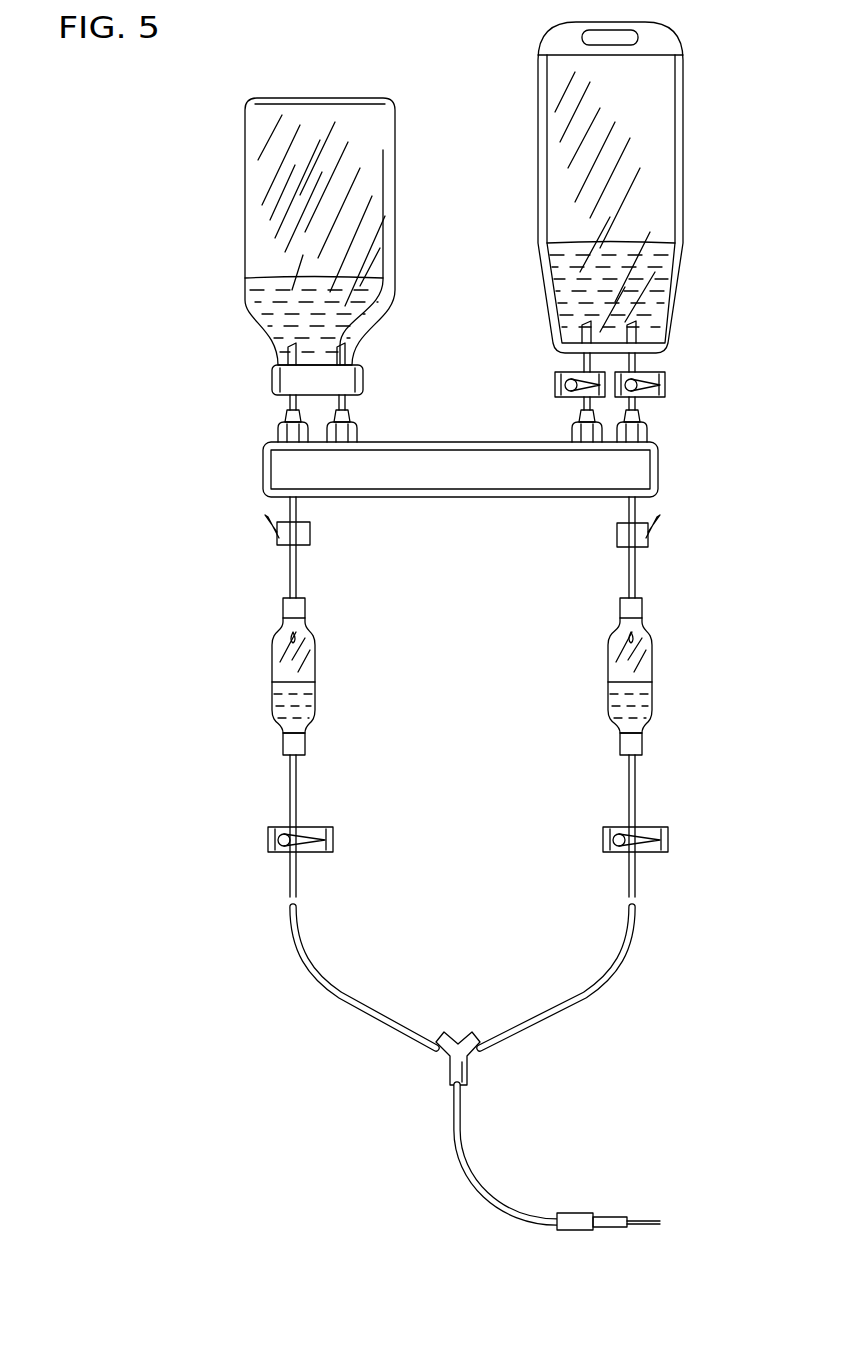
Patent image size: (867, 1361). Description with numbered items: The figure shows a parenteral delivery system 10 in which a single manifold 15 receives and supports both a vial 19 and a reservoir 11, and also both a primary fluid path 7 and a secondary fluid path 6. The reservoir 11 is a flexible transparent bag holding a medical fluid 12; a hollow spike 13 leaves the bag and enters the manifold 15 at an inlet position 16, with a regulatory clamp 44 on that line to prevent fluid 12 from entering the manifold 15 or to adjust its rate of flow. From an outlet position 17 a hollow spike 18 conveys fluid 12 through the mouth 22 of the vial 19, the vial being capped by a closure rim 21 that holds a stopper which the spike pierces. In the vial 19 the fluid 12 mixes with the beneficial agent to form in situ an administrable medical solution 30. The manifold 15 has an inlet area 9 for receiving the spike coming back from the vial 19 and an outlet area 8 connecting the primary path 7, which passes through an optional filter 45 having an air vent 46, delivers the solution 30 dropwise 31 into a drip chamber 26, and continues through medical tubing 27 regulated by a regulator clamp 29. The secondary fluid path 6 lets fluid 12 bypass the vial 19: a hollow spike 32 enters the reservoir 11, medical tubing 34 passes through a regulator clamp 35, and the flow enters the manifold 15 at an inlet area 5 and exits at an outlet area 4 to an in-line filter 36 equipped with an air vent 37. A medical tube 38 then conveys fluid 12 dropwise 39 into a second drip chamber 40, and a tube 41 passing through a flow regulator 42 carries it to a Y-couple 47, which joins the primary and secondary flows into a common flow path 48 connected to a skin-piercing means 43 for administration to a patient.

The parenteral delivery system 10 is at (188, 176).
The vial 19 is at (397, 196).
The medical solution 30 is at (262, 292).
The closure rim 21 is at (272, 378).
The mouth 22 is at (284, 398).
The spike 18 is at (346, 406).
The inlet area 9 is at (276, 434).
The outlet position 17 is at (357, 432).
The reservoir 11 is at (683, 148).
The medical fluid 12 is at (655, 298).
The hollow spike 32 is at (638, 330).
The spike 13 is at (580, 362).
The medical tubing 34 is at (640, 358).
The regulatory clamp 44 is at (556, 385).
The regulator clamp 35 is at (666, 385).
The inlet position 16 is at (572, 432).
The inlet area 5 is at (652, 432).
The outlet area 4 is at (656, 495).
The manifold 15 is at (540, 505).
The outlet area 8 is at (282, 498).
The filter 45 is at (311, 536).
The air vent 46 is at (268, 528).
The drip chamber 26 is at (273, 672).
The dropwise flow 31 is at (291, 638).
The in-line filter 36 is at (617, 542).
The primary fluid path 7 is at (290, 760).
The medical tubing 27 is at (289, 800).
The regulator clamp 29 is at (268, 842).
The medical tube 38 is at (637, 576).
The air vent 37 is at (650, 538).
The drip chamber 40 is at (652, 673).
The dropwise flow 39 is at (633, 640).
The secondary fluid path 6 is at (636, 770).
The tube 41 is at (636, 806).
The flow regulator 42 is at (670, 838).
The Y-couple 47 is at (468, 1078).
The common flow path 48 is at (475, 1168).
The skin-piercing means 43 is at (595, 1212).